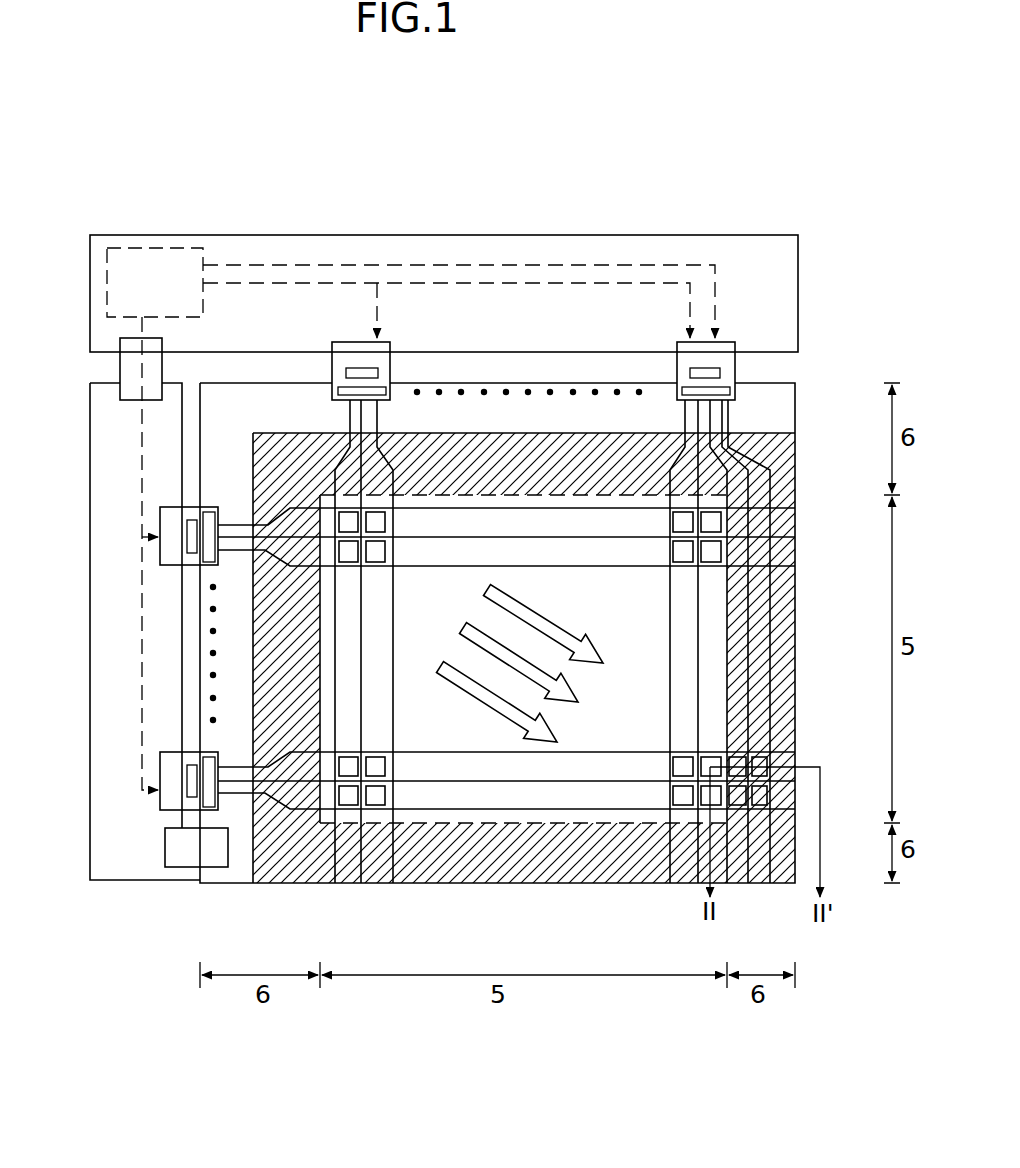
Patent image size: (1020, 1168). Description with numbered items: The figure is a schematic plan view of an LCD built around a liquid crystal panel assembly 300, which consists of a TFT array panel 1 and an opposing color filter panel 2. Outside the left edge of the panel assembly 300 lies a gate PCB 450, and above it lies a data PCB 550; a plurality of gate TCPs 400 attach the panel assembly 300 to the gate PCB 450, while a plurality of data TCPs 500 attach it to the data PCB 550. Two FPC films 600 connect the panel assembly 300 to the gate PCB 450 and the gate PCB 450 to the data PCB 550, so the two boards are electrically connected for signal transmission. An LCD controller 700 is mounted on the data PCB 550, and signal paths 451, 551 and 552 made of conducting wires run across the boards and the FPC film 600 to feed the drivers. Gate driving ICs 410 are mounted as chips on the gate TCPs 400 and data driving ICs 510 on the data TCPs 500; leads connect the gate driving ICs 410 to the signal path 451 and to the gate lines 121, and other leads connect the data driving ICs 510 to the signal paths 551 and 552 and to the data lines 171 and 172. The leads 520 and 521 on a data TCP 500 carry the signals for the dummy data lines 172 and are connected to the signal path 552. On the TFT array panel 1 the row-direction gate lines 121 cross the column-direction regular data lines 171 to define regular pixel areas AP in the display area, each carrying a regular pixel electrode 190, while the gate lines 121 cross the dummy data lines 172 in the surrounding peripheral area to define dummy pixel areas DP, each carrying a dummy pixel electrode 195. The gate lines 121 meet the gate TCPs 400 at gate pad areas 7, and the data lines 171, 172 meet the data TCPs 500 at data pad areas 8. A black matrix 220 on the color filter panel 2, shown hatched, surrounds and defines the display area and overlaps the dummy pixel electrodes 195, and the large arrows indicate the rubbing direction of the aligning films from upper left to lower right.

The LCD controller 700 is at (444, 268).
The signal path 552 is at (492, 265).
The signal path 551 is at (545, 283).
The data pad area 8 is at (380, 336).
The signal path 451 is at (79, 553).
The data PCB 550 is at (701, 206).
The FPC film 600 is at (136, 644).
The gate PCB 450 is at (107, 631).
The TFT array panel 1 is at (521, 602).
The color filter panel 2 is at (780, 432).
The black matrix 220 is at (579, 904).
The liquid crystal panel assembly 300 is at (277, 919).
The data TCP 500 is at (343, 338).
The data driving IC 510 is at (368, 368).
The lead 520 is at (744, 325).
The lead 521 is at (571, 350).
The regular data line 171 is at (337, 578).
The dummy data line 172 is at (805, 641).
The gate TCP 400 is at (128, 658).
The gate driving IC 410 is at (187, 537).
The gate pad area 7 is at (132, 659).
The gate line 121 is at (613, 506).
The regular pixel electrode 190 is at (375, 806).
The dummy pixel area DP is at (745, 750).
The regular pixel area AP is at (700, 815).
The dummy pixel electrode 195 is at (760, 810).